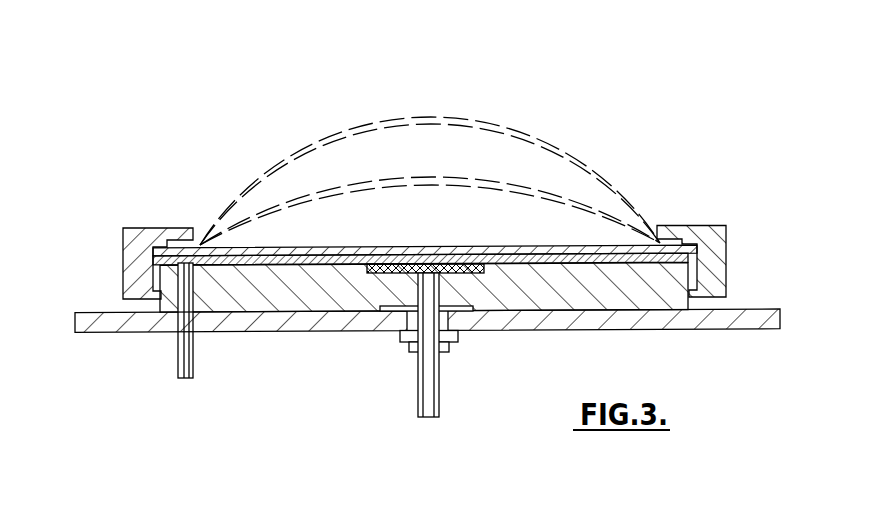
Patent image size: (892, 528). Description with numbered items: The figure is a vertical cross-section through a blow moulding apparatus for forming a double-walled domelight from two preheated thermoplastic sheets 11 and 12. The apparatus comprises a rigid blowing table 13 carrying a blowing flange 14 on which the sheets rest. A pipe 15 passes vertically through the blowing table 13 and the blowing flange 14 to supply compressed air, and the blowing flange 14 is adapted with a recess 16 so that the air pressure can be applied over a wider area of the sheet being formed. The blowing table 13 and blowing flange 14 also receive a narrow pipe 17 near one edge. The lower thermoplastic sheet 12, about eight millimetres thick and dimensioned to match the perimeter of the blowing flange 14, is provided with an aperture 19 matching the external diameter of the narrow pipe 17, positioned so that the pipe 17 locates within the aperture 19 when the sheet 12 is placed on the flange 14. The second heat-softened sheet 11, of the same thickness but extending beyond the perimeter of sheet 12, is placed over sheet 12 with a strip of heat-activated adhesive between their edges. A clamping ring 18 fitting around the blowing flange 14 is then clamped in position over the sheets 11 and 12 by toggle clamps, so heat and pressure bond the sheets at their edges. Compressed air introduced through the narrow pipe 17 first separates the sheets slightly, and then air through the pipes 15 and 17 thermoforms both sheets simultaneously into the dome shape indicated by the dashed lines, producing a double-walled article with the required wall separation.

The thermoplastic sheet 11 is at (495, 250).
The thermoplastic sheet 12 is at (523, 258).
The blowing table 13 is at (252, 335).
The blowing flange 14 is at (348, 303).
The pipe 15 is at (440, 378).
The recess 16 is at (522, 372).
The narrow pipe 17 is at (185, 382).
The clamping ring 18 is at (137, 232).
The aperture 19 is at (160, 263).